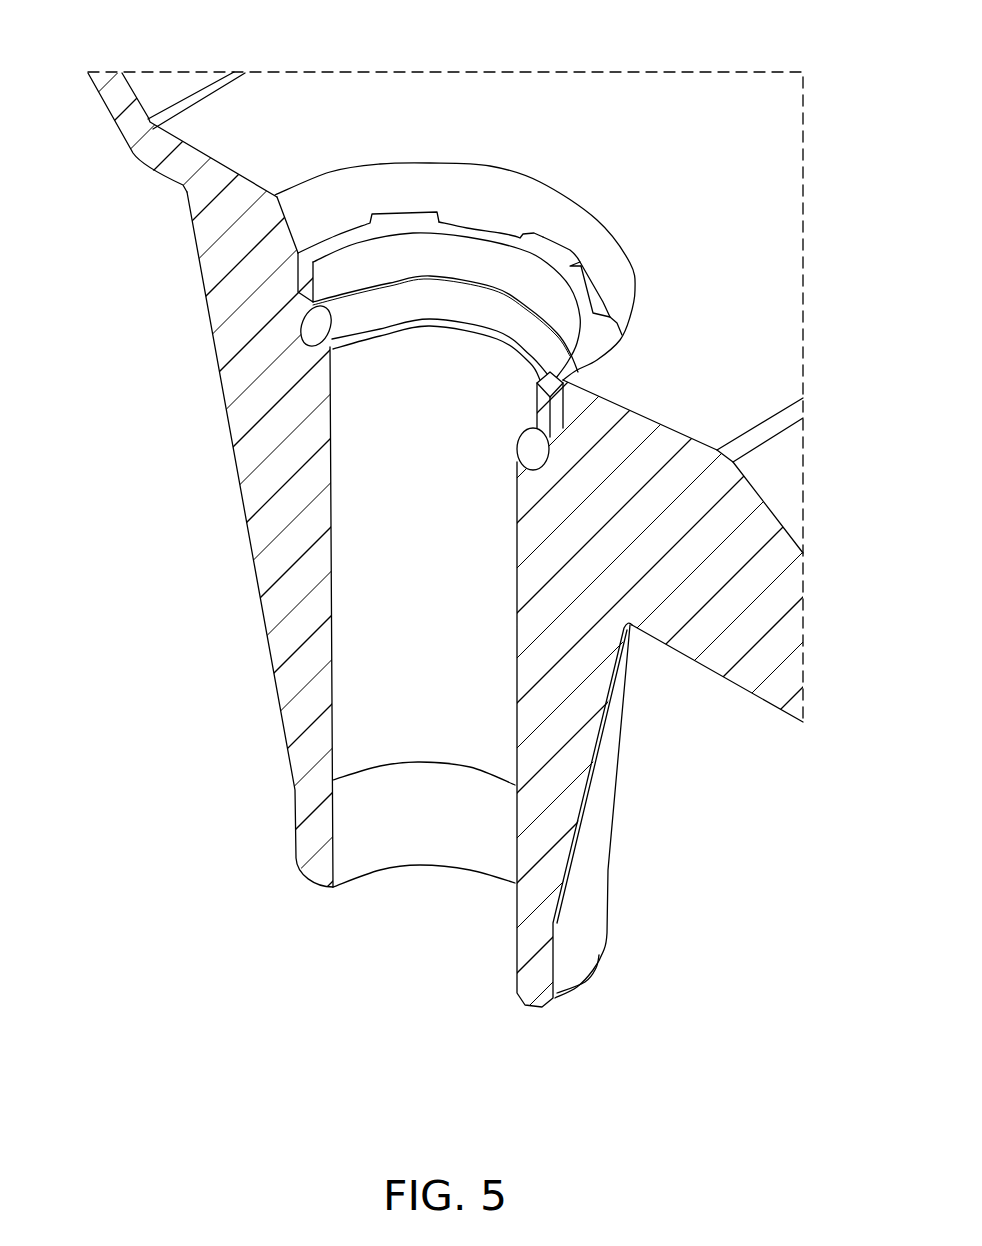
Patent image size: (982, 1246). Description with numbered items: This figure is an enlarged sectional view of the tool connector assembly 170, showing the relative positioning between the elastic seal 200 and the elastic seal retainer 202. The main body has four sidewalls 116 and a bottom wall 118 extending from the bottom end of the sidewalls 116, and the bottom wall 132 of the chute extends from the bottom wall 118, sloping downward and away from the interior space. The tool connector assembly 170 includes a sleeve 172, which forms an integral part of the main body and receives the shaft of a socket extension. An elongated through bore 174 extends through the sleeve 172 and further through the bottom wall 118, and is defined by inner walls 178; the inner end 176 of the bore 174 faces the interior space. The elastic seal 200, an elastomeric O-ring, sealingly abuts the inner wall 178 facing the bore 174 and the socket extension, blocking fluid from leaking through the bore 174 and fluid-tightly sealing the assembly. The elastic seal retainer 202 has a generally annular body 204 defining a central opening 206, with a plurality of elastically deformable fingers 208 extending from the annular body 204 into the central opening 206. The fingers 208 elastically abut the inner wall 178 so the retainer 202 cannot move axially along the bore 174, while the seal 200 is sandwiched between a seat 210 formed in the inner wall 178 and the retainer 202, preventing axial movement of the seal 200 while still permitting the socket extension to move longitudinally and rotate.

The sidewalls 116 is at (115, 98).
The bottom wall 118 is at (773, 297).
The bottom wall of the chute 132 is at (777, 690).
The tool connector assembly 170 is at (166, 519).
The sleeve 172 is at (610, 850).
The bore 174 is at (368, 642).
The inner end 176 is at (395, 157).
The inner wall 178 is at (293, 204).
The elastic seal 200 is at (470, 310).
The elastic seal retainer 202 is at (460, 224).
The annular body 204 is at (497, 258).
The central opening 206 is at (362, 262).
The fingers 208 is at (557, 247).
The seat 210 is at (517, 343).